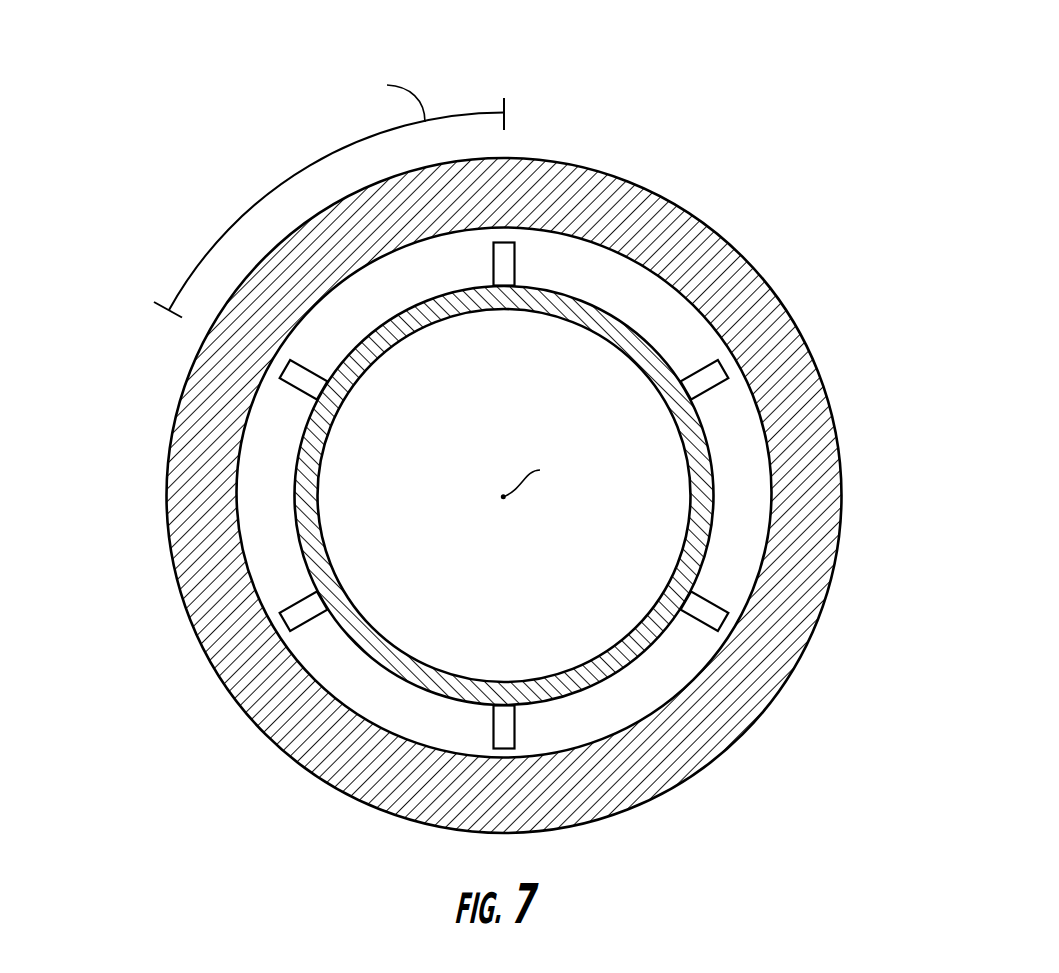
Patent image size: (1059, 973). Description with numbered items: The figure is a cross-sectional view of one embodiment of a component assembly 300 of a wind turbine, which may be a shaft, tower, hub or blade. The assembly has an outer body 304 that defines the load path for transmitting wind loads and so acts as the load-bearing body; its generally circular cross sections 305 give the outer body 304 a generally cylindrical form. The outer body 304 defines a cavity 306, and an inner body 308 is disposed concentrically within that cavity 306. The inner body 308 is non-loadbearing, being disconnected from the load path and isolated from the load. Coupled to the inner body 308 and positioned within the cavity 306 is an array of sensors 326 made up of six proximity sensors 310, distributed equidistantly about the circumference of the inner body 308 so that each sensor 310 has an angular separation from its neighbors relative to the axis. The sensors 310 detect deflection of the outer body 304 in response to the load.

The component assembly 300 is at (493, 416).
The outer body 304 is at (697, 228).
The generally circular cross sections 305 is at (902, 410).
The cavity 306 is at (604, 574).
The inner body 308 is at (597, 325).
The sensor 310 is at (700, 377).
The array of sensors 326 is at (107, 567).